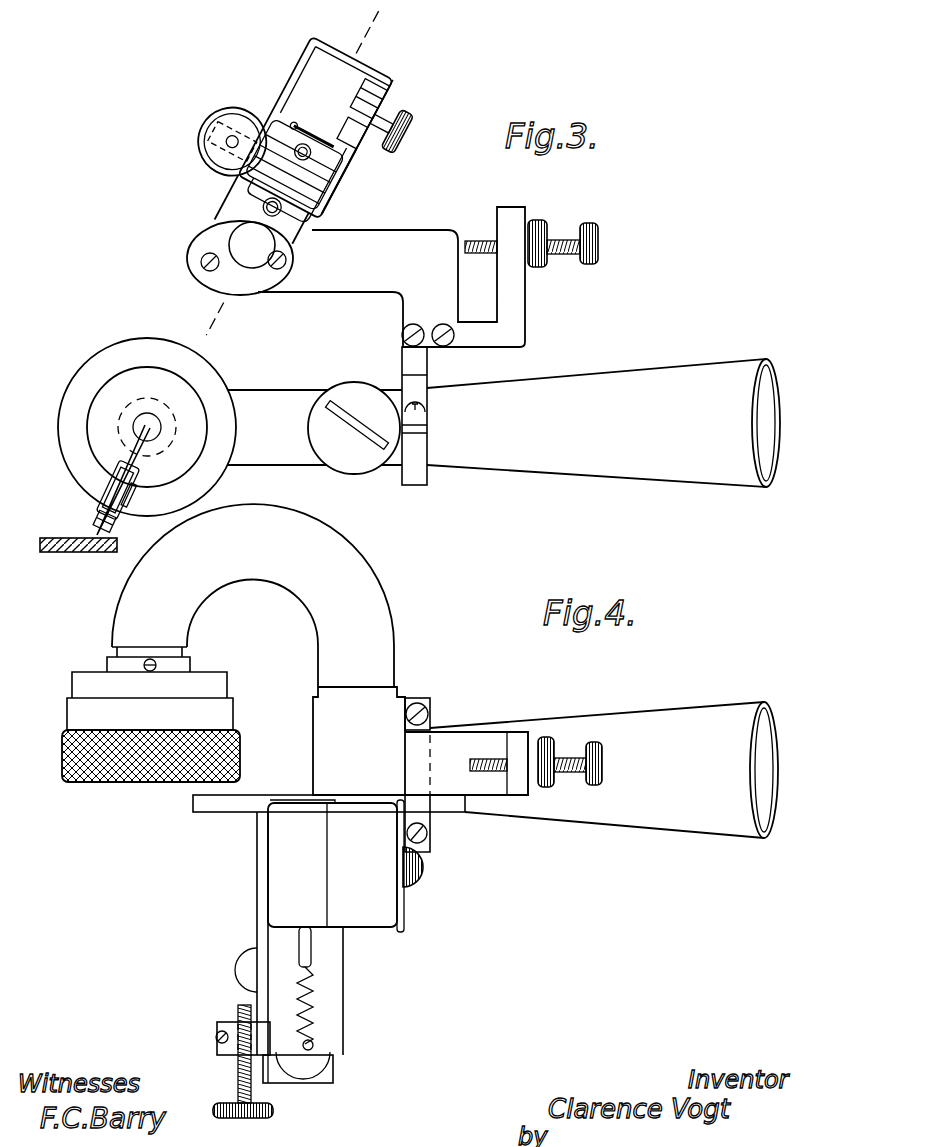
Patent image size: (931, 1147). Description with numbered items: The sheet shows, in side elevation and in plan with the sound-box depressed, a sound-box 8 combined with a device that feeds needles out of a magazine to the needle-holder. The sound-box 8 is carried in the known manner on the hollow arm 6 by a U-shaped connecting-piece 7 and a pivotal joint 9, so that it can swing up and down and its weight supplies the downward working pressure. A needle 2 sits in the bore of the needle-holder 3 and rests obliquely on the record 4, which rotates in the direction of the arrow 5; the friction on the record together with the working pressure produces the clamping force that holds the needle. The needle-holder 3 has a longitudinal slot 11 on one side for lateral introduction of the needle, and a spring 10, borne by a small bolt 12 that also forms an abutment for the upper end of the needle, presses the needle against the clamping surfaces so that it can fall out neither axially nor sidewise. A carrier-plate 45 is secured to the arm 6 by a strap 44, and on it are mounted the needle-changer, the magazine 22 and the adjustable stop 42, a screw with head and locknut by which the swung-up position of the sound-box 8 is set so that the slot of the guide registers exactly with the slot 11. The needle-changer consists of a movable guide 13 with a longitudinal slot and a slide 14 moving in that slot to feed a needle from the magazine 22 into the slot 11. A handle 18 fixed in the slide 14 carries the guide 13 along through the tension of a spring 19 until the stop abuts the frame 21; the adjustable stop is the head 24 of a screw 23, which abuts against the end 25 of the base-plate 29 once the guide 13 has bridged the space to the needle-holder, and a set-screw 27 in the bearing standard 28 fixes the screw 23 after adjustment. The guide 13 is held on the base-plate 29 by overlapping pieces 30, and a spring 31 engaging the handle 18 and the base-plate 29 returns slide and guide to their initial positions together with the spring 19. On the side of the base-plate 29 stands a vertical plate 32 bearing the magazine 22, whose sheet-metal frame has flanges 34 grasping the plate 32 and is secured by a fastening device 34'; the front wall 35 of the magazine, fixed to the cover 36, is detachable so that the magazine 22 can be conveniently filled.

In FIG. 3, the needle 2 is at (98, 530).
In FIG. 3, the needle-holder 3 is at (150, 440).
In FIG. 3, the record 4 is at (60, 553).
In FIG. 3, the arrow 5 is at (100, 570).
In FIG. 3, the hollow arm 6 is at (603, 423).
In FIG. 4, the hollow arm 6 is at (604, 770).
In FIG. 3, the U-shaped connecting-piece 7 is at (315, 427).
In FIG. 4, the U-shaped connecting-piece 7 is at (253, 595).
In FIG. 3, the sound-box 8 is at (68, 445).
In FIG. 4, the sound-box 8 is at (151, 714).
In FIG. 3, the pivotal joint 9 is at (354, 428).
In FIG. 4, the pivotal joint 9 is at (359, 741).
In FIG. 3, the spring 10 is at (122, 518).
In FIG. 3, the longitudinal slot 11 is at (122, 468).
In FIG. 3, the small bolt 12 is at (136, 486).
In FIG. 3, the movable guide 13 is at (293, 127).
In FIG. 4, the movable guide 13 is at (276, 803).
In FIG. 3, the slide 14 is at (326, 197).
In FIG. 4, the slide 14 is at (336, 1066).
In FIG. 3, the handle 18 is at (252, 245).
In FIG. 4, the handle 18 is at (238, 972).
In FIG. 3, the spring 19 is at (306, 154).
In FIG. 4, the spring 19 is at (315, 1012).
In FIG. 3, the frame 21 is at (205, 244).
In FIG. 4, the frame 21 is at (212, 814).
In FIG. 3, the needle-magazine 22 is at (313, 72).
In FIG. 4, the needle-magazine 22 is at (348, 808).
In FIG. 4, the screw 23 is at (238, 1084).
In FIG. 3, the screw-head 24 is at (205, 150).
In FIG. 4, the screw-head 24 is at (245, 1119).
In FIG. 4, the end of the base-frame 25 is at (282, 1080).
In FIG. 4, the set-screw 27 is at (216, 1037).
In FIG. 3, the bearing standard 28 is at (210, 136).
In FIG. 4, the bearing standard 28 is at (217, 1053).
In FIG. 3, the base-plate 29 is at (309, 211).
In FIG. 4, the base-plate 29 is at (279, 1085).
In FIG. 3, the overlapping pieces 30 is at (263, 208).
In FIG. 3, the spring 31 is at (275, 213).
In FIG. 3, the vertical plate 32 is at (352, 158).
In FIG. 4, the vertical plate 32 is at (404, 906).
In FIG. 3, the flanges 34 is at (353, 114).
In FIG. 3, the fastening device 34' is at (409, 126).
In FIG. 4, the fastening device 34' is at (433, 856).
In FIG. 3, the front wall 35 is at (312, 52).
In FIG. 4, the front wall 35 is at (305, 865).
In FIG. 3, the cover 36 is at (368, 80).
In FIG. 4, the cover 36 is at (361, 866).
In FIG. 3, the adjustable stop 42 is at (537, 238).
In FIG. 4, the adjustable stop 42 is at (548, 764).
In FIG. 3, the strap 44 is at (417, 487).
In FIG. 4, the strap 44 is at (432, 722).
In FIG. 3, the carrier-plate 45 is at (305, 283).
In FIG. 4, the carrier-plate 45 is at (452, 812).